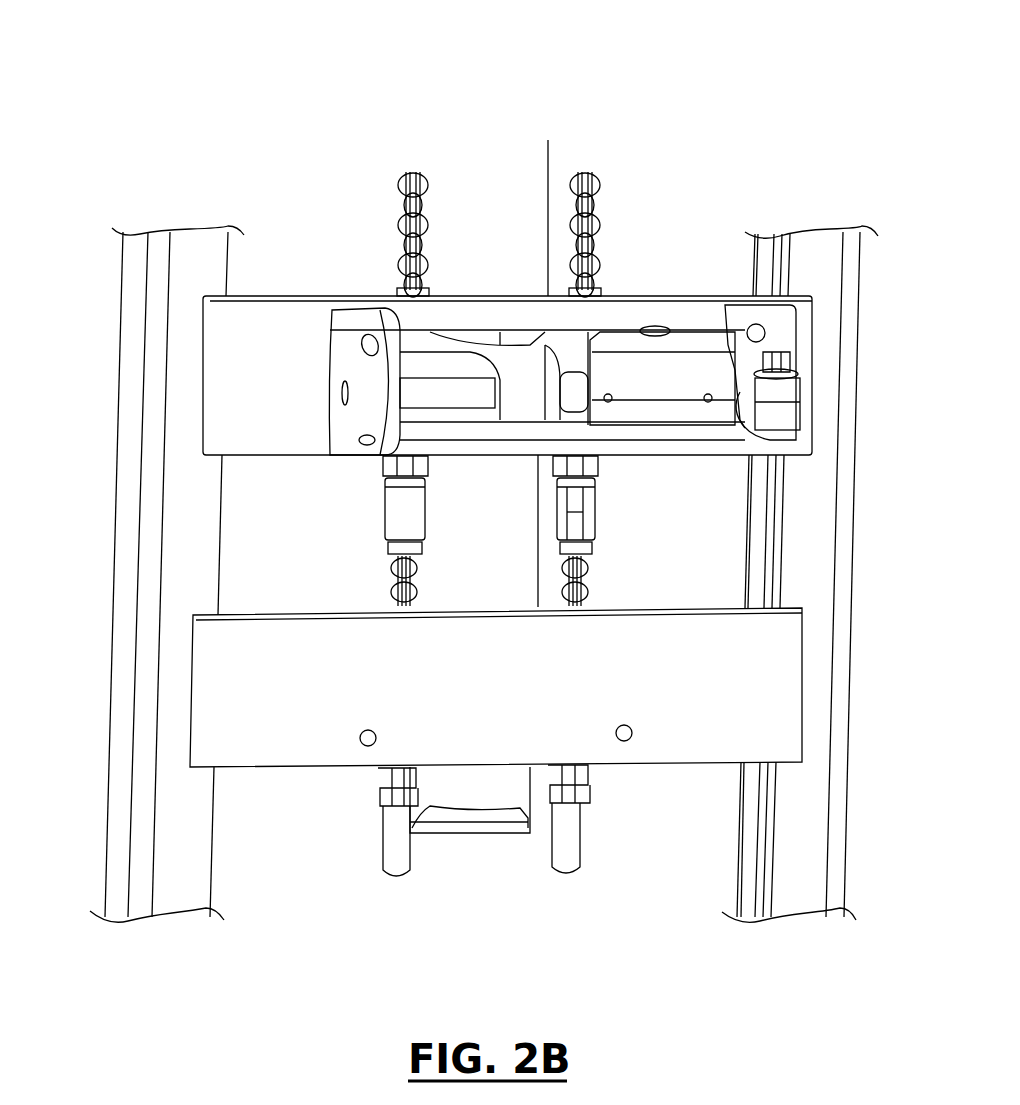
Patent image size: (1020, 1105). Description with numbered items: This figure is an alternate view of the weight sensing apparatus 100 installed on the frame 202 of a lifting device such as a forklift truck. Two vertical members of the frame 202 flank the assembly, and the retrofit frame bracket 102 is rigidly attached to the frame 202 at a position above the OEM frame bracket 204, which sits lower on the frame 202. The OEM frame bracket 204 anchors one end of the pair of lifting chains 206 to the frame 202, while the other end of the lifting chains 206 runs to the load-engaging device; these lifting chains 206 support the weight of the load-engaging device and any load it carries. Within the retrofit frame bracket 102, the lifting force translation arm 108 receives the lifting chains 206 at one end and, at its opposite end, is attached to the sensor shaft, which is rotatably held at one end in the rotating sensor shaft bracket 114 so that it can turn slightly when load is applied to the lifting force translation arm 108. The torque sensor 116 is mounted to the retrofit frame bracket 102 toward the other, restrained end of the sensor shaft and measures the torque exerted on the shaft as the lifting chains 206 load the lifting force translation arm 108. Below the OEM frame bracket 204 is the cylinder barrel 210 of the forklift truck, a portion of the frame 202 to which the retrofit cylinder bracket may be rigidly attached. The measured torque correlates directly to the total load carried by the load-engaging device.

The weight sensing apparatus 100 is at (700, 132).
The retrofit frame bracket 102 is at (283, 392).
The lifting force translation arm 108 is at (533, 390).
The rotating sensor shaft bracket 114 is at (362, 322).
The torque sensor 116 is at (682, 370).
The frame 202 is at (194, 243).
The OEM frame bracket 204 is at (282, 708).
The lifting chains 206 is at (415, 180).
The cylinder barrel 210 is at (470, 787).